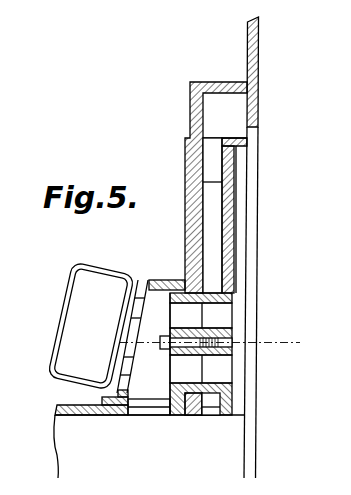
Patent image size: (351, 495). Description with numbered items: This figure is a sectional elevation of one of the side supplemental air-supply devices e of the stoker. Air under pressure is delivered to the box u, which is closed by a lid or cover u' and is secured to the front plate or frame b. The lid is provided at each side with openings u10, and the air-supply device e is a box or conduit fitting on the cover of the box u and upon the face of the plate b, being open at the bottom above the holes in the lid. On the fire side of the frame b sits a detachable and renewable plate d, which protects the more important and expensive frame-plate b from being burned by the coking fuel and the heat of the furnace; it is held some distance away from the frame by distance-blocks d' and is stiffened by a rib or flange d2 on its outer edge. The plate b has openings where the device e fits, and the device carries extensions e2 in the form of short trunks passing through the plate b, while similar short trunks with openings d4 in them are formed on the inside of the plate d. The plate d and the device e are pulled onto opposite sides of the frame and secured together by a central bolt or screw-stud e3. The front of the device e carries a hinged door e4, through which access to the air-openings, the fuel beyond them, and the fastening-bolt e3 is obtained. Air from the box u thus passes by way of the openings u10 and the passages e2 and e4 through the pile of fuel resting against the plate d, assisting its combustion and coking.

The front plate or frame b is at (189, 145).
The distance-blocks d' is at (218, 197).
The rib or flange d2 is at (240, 143).
The detachable and renewable plates d is at (250, 282).
The openings d4 is at (219, 313).
The air-supply devices e is at (163, 302).
The extensions e2 is at (182, 316).
The central bolt or screw-stud e3 is at (162, 341).
The hinged door e4 is at (72, 320).
The box u is at (149, 446).
The lid or cover u' is at (82, 399).
The openings u10 is at (146, 412).